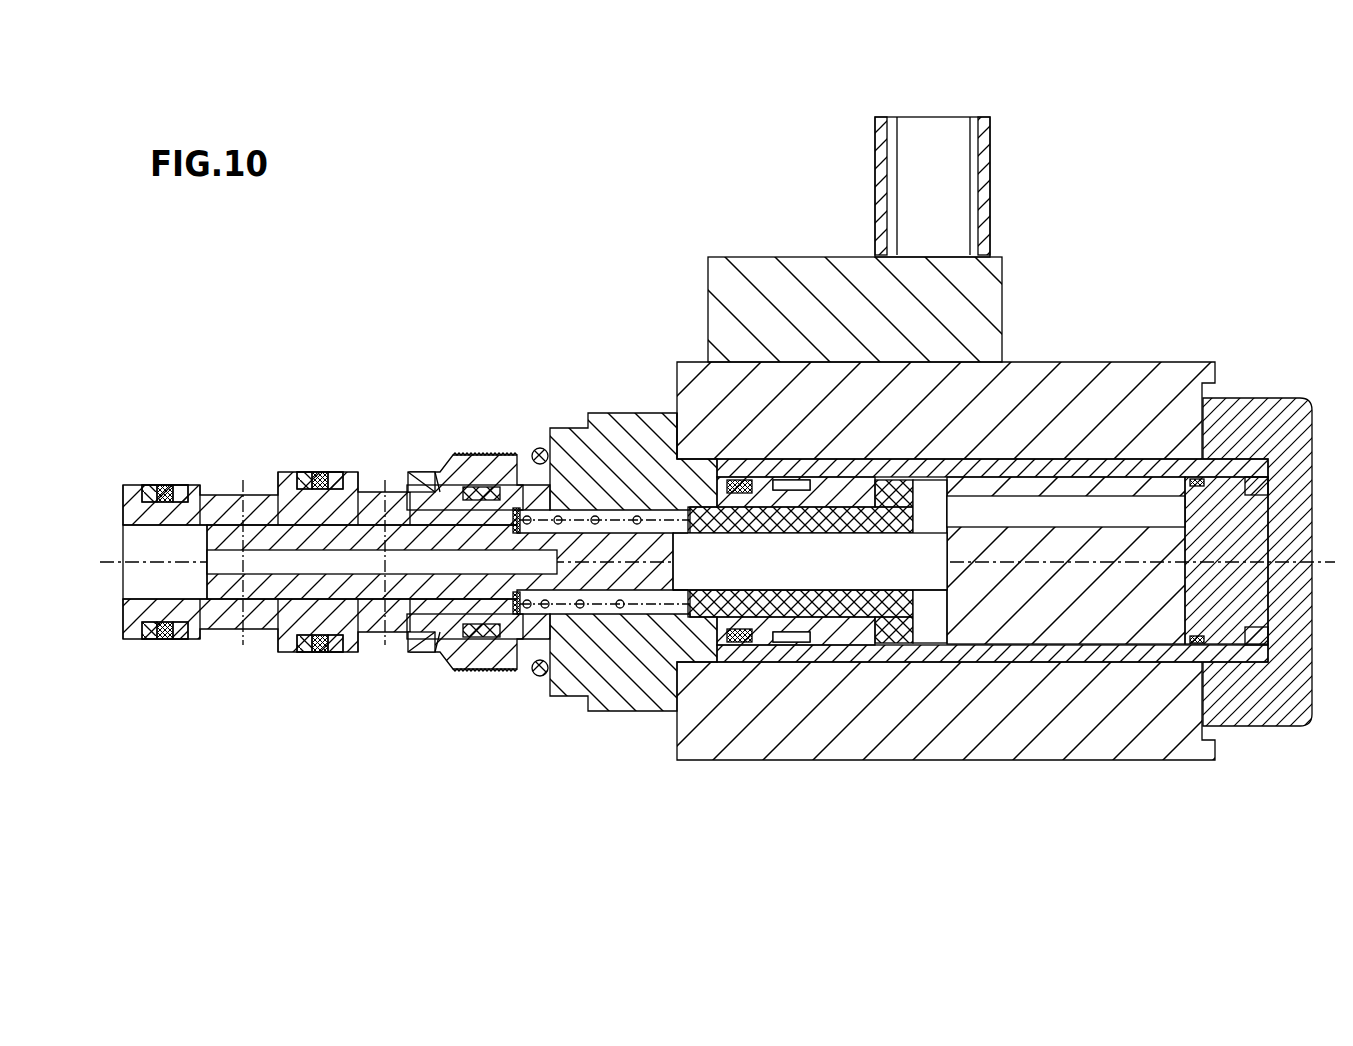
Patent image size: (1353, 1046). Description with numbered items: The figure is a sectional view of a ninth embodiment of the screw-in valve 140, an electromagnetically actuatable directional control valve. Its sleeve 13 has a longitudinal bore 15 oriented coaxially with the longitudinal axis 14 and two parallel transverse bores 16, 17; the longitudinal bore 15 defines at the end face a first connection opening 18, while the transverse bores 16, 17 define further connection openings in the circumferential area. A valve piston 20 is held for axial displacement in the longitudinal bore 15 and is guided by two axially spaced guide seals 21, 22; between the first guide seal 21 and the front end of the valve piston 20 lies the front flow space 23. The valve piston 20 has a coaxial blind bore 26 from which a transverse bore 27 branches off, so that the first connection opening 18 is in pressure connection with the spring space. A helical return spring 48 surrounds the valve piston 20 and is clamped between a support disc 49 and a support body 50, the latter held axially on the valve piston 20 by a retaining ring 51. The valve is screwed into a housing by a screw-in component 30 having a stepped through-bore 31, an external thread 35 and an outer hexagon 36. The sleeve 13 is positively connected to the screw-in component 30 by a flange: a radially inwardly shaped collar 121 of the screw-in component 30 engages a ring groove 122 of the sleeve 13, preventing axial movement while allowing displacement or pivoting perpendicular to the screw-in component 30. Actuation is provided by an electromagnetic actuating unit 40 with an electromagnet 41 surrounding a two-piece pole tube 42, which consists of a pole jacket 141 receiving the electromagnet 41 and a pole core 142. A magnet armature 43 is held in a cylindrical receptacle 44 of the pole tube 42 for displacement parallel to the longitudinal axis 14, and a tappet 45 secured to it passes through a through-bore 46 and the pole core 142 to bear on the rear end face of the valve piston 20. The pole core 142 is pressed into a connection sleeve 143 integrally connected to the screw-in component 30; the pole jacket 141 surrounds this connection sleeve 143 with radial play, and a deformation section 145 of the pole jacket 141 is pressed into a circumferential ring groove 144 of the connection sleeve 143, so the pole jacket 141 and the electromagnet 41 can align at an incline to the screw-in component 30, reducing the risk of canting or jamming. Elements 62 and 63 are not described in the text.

The screw-in valve 140 is at (992, 484).
The electromagnetic actuating unit 40 is at (1066, 342).
The electromagnet 41 is at (1160, 387).
The cylinder housing 62 is at (686, 426).
The ring groove 144 is at (802, 490).
The connection sleeve 143 is at (852, 490).
The deformation section 145 is at (792, 468).
The pole tube 42 is at (1030, 452).
The tappet 45 is at (868, 585).
The through-bore 46 is at (908, 585).
The cylindrical receptacle 44 is at (1066, 664).
The pole core 142 is at (948, 518).
The pole jacket 141 is at (1050, 650).
The magnet armature 43 is at (1140, 610).
The support body 50 is at (695, 530).
The retaining ring 51 is at (690, 590).
The screw-in component 30 is at (628, 392).
The hexagon 36 is at (632, 715).
The housing wall 63 is at (660, 420).
The external thread 35 is at (470, 460).
The first guide seal 21 is at (218, 500).
The front flow space 23 is at (198, 632).
The sleeve 13 is at (340, 462).
The second guide seal 22 is at (392, 508).
The collar 121 is at (430, 493).
The ring groove 122 is at (437, 490).
The helical return spring 48 is at (500, 650).
The stepped through-bore 31 is at (440, 655).
The support disc 49 is at (513, 460).
The valve piston 20 is at (288, 606).
The blind bore 26 is at (205, 550).
The transverse bore 27 is at (545, 533).
The transverse bore 16 is at (233, 632).
The transverse bore 17 is at (387, 598).
The longitudinal axis 14 is at (123, 560).
The first connection opening 18 is at (123, 525).
The longitudinal bore 15 is at (123, 600).